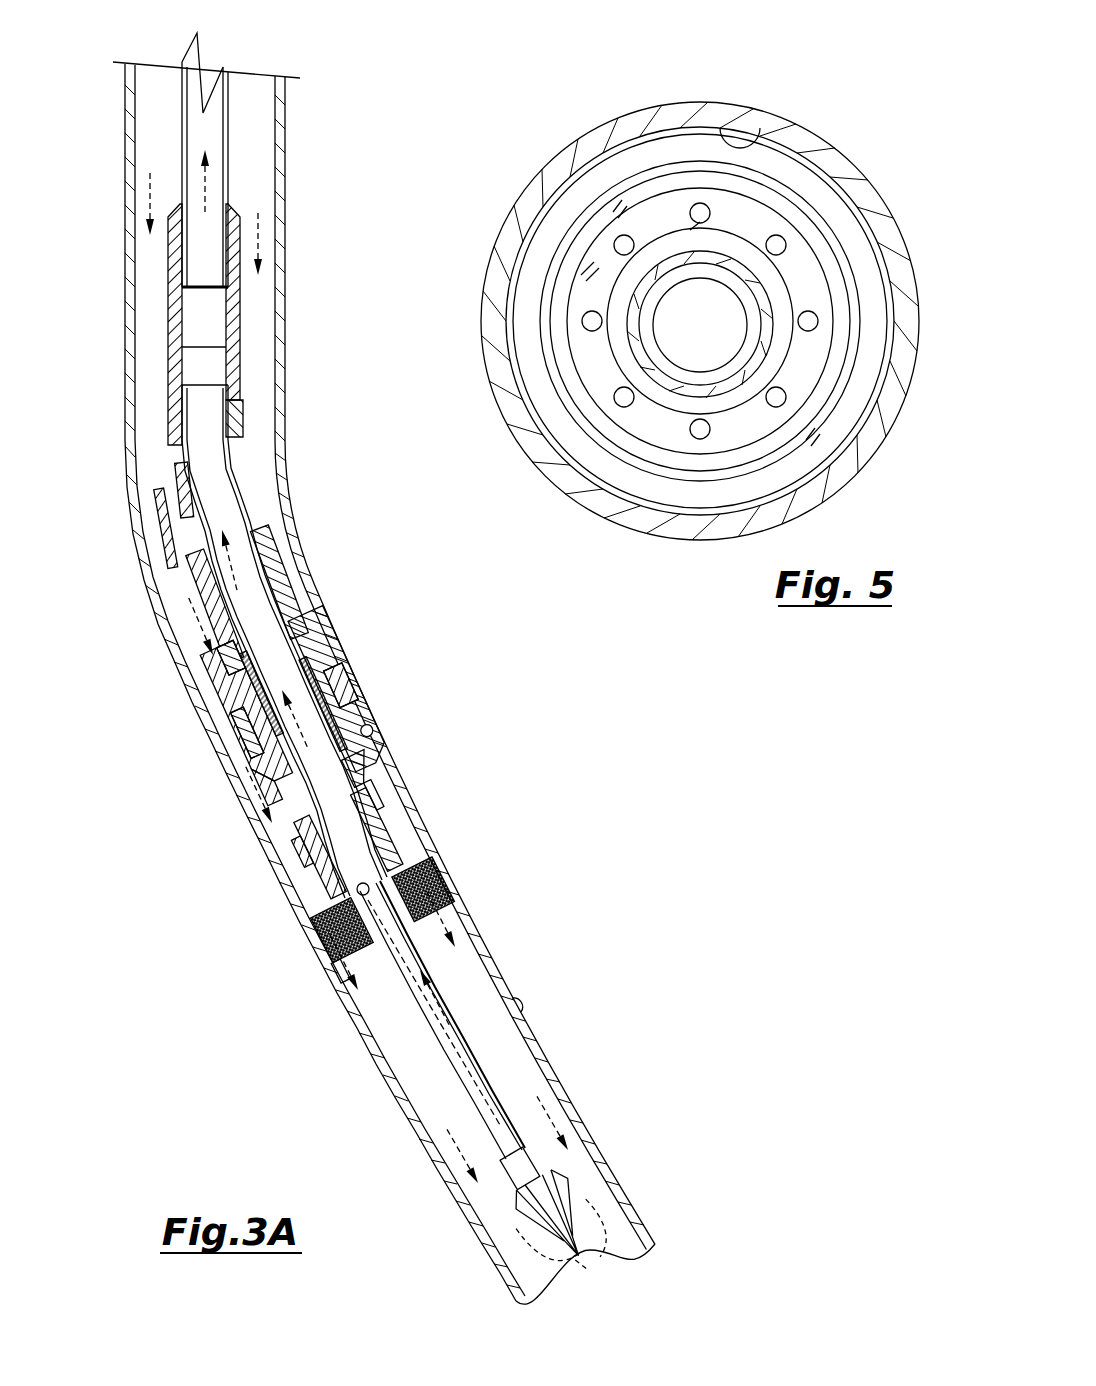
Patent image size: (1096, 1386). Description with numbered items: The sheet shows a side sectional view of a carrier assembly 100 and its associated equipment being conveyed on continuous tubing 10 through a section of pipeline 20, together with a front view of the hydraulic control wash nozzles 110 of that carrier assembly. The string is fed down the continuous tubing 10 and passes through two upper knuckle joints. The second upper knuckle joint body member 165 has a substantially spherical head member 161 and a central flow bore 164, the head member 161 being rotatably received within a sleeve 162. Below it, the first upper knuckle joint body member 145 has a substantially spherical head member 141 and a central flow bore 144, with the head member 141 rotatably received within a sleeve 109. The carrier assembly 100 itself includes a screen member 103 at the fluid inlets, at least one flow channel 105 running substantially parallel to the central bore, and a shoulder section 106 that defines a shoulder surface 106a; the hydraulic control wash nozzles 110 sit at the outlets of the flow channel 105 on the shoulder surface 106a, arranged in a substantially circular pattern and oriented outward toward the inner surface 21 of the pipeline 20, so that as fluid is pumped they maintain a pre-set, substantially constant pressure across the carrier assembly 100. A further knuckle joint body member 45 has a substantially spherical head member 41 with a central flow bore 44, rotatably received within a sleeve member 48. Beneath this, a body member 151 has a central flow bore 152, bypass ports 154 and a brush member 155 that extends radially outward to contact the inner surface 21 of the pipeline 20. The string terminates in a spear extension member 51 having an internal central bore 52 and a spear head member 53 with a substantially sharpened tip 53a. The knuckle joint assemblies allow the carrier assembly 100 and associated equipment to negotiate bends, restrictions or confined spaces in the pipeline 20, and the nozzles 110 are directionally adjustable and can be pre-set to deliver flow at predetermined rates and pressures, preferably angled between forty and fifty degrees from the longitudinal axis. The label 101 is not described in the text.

In FIG. 3A, the continuous tubing 10 is at (228, 122).
In FIG. 3A, the pipeline 20 is at (128, 198).
In FIG. 5, the pipeline 20 is at (848, 472).
In FIG. 3A, the inner surface 21 is at (521, 1012).
In FIG. 5, the inner surface 21 is at (718, 122).
In FIG. 3A, the substantially spherical head member 41 is at (376, 802).
In FIG. 3A, the central flow bore 44 is at (340, 688).
In FIG. 3A, the knuckle joint body member 45 is at (370, 776).
In FIG. 3A, the sleeve member 48 is at (300, 851).
In FIG. 3A, the spear extension member 51 is at (480, 962).
In FIG. 3A, the internal central bore 52 is at (412, 1040).
In FIG. 3A, the spear head member 53 is at (562, 1196).
In FIG. 3A, the substantially sharpened tip 53a is at (582, 1255).
In FIG. 3A, the carrier assembly 100 is at (345, 640).
In FIG. 3A, the threaded connection 101 is at (286, 602).
In FIG. 3A, the screen member 103 is at (215, 702).
In FIG. 3A, the flow channel 105 is at (225, 722).
In FIG. 3A, the shoulder section 106 is at (255, 792).
In FIG. 5, the shoulder surface 106a is at (660, 440).
In FIG. 3A, the sleeve 109 is at (170, 528).
In FIG. 3A, the hydraulic control wash nozzles 110 is at (355, 736).
In FIG. 5, the hydraulic control wash nozzles 110 is at (617, 238).
In FIG. 3A, the substantially spherical head member 141 is at (262, 560).
In FIG. 3A, the central flow bore 144 is at (218, 590).
In FIG. 3A, the first upper knuckle joint body member 145 is at (215, 640).
In FIG. 3A, the body member 151 is at (385, 832).
In FIG. 3A, the central flow bore 152 is at (305, 870).
In FIG. 3A, the bypass ports 154 is at (402, 872).
In FIG. 3A, the brush member 155 is at (332, 965).
In FIG. 3A, the substantially spherical head member 161 is at (240, 396).
In FIG. 3A, the sleeve 162 is at (243, 425).
In FIG. 3A, the central flow bore 164 is at (176, 392).
In FIG. 3A, the second upper knuckle joint body member 165 is at (180, 443).